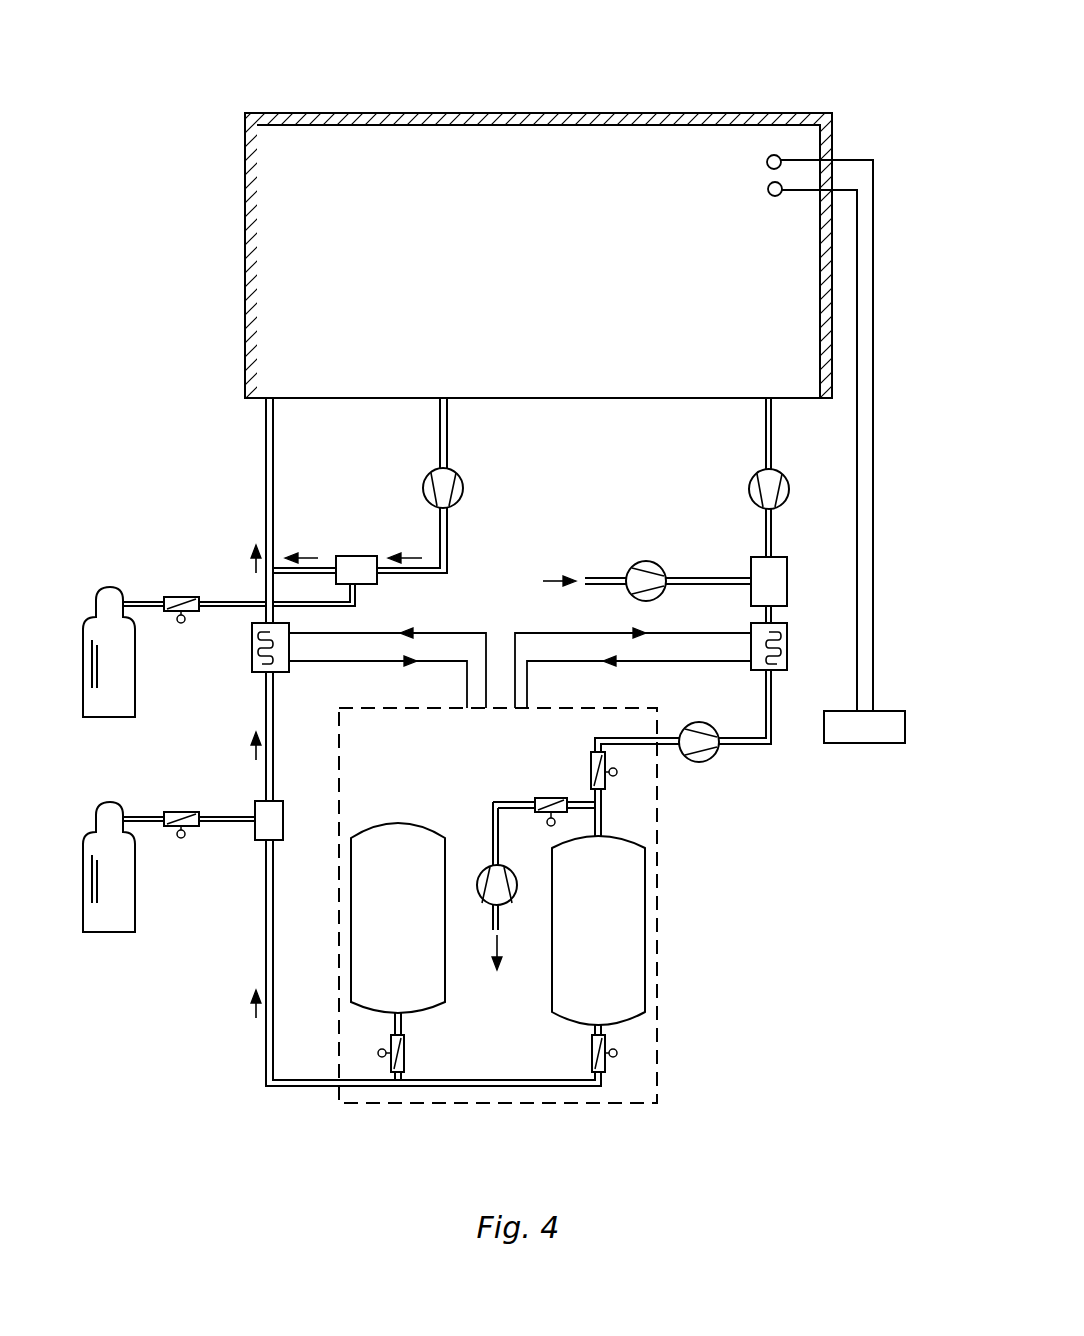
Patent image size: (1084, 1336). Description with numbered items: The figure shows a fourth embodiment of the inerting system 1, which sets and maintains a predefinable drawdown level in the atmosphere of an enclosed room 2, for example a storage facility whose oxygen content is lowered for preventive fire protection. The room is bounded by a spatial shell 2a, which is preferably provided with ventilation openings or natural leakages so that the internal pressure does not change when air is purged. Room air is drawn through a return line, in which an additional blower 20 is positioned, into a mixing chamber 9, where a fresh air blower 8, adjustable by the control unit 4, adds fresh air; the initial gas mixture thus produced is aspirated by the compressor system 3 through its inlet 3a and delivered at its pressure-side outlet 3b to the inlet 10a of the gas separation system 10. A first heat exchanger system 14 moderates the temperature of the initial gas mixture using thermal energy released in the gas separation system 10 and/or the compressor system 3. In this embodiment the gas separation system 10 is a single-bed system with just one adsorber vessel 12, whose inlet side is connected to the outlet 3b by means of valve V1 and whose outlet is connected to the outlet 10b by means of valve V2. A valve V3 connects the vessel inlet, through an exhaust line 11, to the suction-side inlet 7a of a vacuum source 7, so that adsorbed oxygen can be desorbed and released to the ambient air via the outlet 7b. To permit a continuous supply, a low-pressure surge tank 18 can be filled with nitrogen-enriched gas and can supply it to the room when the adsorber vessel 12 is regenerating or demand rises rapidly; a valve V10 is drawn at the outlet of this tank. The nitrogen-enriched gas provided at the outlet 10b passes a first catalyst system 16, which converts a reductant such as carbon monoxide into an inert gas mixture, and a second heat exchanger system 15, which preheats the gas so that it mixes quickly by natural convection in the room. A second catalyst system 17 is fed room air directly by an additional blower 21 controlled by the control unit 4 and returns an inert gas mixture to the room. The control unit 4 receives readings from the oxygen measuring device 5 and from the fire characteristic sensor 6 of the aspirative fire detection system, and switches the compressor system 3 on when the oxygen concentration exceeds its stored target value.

The inerting system 1 is at (493, 620).
The enclosed room 2 is at (410, 145).
The spatial shell 2a is at (518, 115).
The compressor system 3 is at (699, 763).
The inlet of the compressor system 3a is at (720, 748).
The outlet of the compressor system 3b is at (676, 736).
The control unit 4 is at (870, 744).
The oxygen measuring device 5 is at (771, 185).
The fire characteristic sensor 6 is at (777, 158).
The vacuum source 7 is at (485, 888).
The suction-side inlet of the vacuum source 7a is at (494, 866).
The outlet of the vacuum source 7b is at (501, 906).
The fresh air blower 8 is at (634, 578).
The mixing chamber 9 is at (785, 583).
The gas separation system 10 is at (462, 1103).
The inlet of the gas separation system 10a is at (664, 747).
The outlet of the gas separation system 10b is at (323, 1083).
The exhaust line 11 is at (491, 800).
The adsorber vessel 12 is at (598, 930).
The first heat exchanger system 14 is at (780, 672).
The second heat exchanger system 15 is at (262, 665).
The first catalyst system 16 is at (265, 833).
The second catalyst system 17 is at (347, 579).
The low-pressure surge tank 18 is at (398, 918).
The additional blower 20 is at (770, 492).
The additional blower 21 is at (440, 485).
The valve V1 is at (623, 794).
The valve V2 is at (619, 1048).
The valve V3 is at (551, 801).
The valve V10 is at (413, 1046).